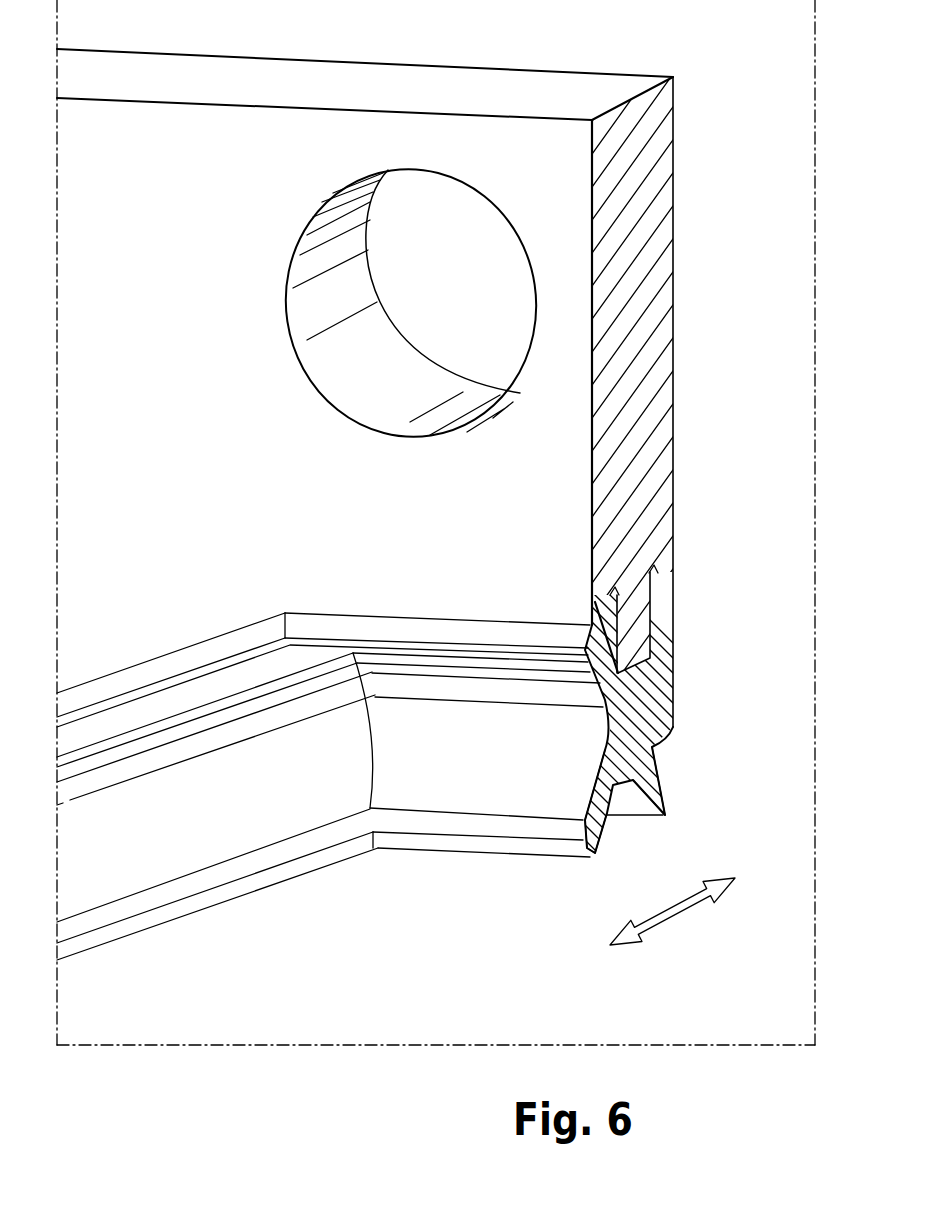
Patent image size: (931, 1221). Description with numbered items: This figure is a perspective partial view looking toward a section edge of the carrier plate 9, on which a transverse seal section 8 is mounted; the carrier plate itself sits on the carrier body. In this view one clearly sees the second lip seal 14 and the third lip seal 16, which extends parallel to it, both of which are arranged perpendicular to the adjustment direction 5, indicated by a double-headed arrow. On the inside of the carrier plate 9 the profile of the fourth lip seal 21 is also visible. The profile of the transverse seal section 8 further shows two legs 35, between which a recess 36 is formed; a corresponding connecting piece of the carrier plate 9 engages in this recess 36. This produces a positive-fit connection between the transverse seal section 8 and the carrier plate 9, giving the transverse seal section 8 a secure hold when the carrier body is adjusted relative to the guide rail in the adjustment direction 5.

The carrier plate 9 is at (537, 83).
The fourth lip seal 21 is at (158, 668).
The legs 35 is at (663, 568).
The recess 36 is at (640, 647).
The transverse seal section 8 is at (637, 723).
The third lip seal 16 is at (660, 812).
The second lip seal 14 is at (592, 838).
The adjustment direction 5 is at (667, 910).